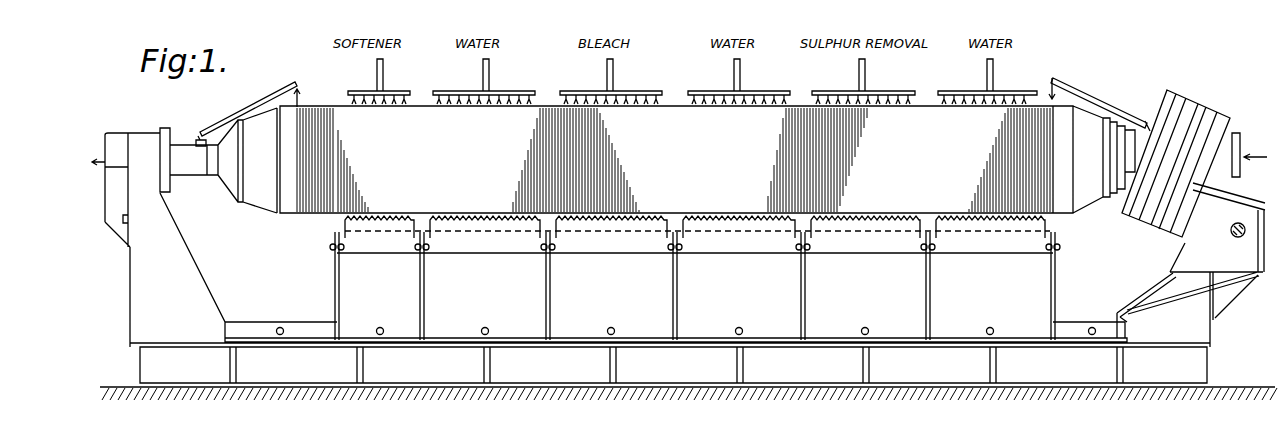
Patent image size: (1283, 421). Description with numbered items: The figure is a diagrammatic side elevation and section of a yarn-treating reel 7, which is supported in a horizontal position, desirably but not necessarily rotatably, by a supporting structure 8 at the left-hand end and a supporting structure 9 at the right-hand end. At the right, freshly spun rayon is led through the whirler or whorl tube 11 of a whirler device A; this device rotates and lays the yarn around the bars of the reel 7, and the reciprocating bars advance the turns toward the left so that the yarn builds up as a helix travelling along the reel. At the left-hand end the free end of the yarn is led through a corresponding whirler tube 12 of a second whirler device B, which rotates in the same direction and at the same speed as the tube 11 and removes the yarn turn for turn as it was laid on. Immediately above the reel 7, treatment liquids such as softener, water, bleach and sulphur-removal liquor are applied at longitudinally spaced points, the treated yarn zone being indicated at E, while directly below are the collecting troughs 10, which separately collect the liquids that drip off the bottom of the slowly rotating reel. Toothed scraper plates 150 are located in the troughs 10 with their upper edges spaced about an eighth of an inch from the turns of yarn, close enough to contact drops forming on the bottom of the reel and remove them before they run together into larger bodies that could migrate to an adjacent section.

The reel 7 is at (311, 224).
The material charge in drum E is at (315, 115).
The whirler tube 12 is at (268, 92).
The whirler device B is at (191, 124).
The supporting structure 8 is at (192, 243).
The supporting structure 9 is at (1165, 256).
The collecting troughs 10 is at (347, 284).
The whirler tube 11 is at (1097, 100).
The whirler device A is at (1203, 98).
The toothed scraper plates 150 is at (603, 240).